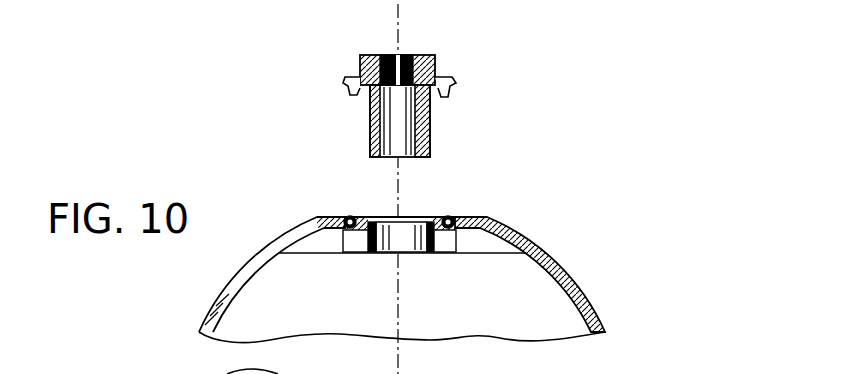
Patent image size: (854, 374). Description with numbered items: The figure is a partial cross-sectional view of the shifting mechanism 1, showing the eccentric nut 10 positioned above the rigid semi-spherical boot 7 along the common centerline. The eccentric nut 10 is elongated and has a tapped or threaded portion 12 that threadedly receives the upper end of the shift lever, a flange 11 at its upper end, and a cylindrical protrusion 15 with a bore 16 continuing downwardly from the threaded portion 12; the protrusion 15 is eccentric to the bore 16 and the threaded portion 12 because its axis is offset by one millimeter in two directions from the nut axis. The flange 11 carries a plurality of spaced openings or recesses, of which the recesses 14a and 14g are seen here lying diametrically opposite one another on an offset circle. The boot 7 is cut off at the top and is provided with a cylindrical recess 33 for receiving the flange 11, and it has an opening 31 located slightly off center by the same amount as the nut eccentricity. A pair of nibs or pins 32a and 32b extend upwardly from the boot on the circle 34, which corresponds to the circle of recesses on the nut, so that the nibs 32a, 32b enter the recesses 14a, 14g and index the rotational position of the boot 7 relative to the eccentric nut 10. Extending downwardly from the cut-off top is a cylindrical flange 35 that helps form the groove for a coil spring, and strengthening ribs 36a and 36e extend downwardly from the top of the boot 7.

The shifting mechanism 1 is at (498, 264).
The rigid semi-spherical boot 7 is at (566, 258).
The eccentric nut 10 is at (461, 84).
The flange 11 is at (448, 84).
The tapped or threaded portion 12 is at (407, 55).
The cylindrical protrusion 15 is at (432, 138).
The bore 16 is at (412, 128).
The nib or pin 32a is at (348, 87).
The nib or pin 32b is at (452, 98).
The opening or recess 14a is at (352, 216).
The opening or recess 14g is at (452, 216).
The opening 31 is at (410, 218).
The cylindrical recess 33 is at (340, 243).
The circle 34 is at (403, 254).
The cylindrical flange 35 is at (357, 253).
The strengthening rib 36a is at (312, 246).
The strengthening rib 36e is at (490, 243).